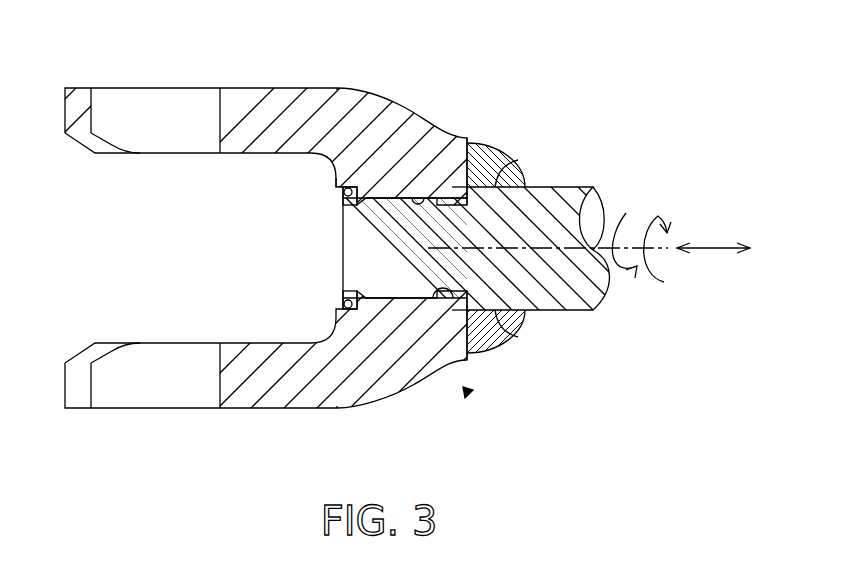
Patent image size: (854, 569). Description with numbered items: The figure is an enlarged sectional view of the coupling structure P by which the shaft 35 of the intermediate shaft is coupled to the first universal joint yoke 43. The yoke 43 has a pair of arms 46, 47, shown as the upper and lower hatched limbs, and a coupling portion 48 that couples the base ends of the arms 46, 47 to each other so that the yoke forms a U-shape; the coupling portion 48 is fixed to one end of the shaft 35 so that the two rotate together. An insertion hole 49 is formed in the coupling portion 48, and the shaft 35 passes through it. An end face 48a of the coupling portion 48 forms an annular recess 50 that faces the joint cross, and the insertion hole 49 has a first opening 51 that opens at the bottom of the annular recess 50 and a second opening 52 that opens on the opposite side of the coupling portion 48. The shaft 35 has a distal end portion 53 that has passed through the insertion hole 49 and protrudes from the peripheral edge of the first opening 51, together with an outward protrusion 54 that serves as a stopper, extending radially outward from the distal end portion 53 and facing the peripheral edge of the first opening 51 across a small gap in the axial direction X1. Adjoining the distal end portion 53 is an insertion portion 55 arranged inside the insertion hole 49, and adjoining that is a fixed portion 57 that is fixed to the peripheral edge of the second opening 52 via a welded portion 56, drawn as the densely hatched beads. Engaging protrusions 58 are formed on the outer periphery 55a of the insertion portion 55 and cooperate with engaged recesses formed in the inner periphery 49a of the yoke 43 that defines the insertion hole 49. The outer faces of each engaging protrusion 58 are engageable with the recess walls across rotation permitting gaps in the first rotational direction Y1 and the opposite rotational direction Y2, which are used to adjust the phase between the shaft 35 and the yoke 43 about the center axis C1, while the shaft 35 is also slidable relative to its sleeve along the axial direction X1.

The shaft 35 is at (583, 182).
The first universal joint yoke 43 is at (299, 84).
The arm 46 is at (252, 95).
The arm 47 is at (240, 397).
The coupling portion 48 is at (370, 173).
The end face of the coupling portion 48a is at (334, 178).
The insertion hole 49 is at (455, 307).
The inner periphery of the first universal joint yoke 49a is at (428, 186).
The annular recess 50 is at (336, 188).
The first opening 51 is at (343, 298).
The second opening 52 is at (460, 298).
The distal end portion 53 is at (350, 252).
The outward protrusion 54 is at (336, 195).
The insertion portion 55 is at (412, 262).
The outer periphery of the insertion portion 55a is at (455, 197).
The welded portion 56 is at (488, 155).
The fixed portion 57 is at (515, 186).
The engaging protrusion 58 is at (392, 197).
The central axis C1 is at (563, 252).
The coupling structure P is at (466, 391).
The axial direction X1 is at (713, 247).
The first rotational direction Y1 is at (625, 220).
The rotational direction Y2 is at (664, 218).